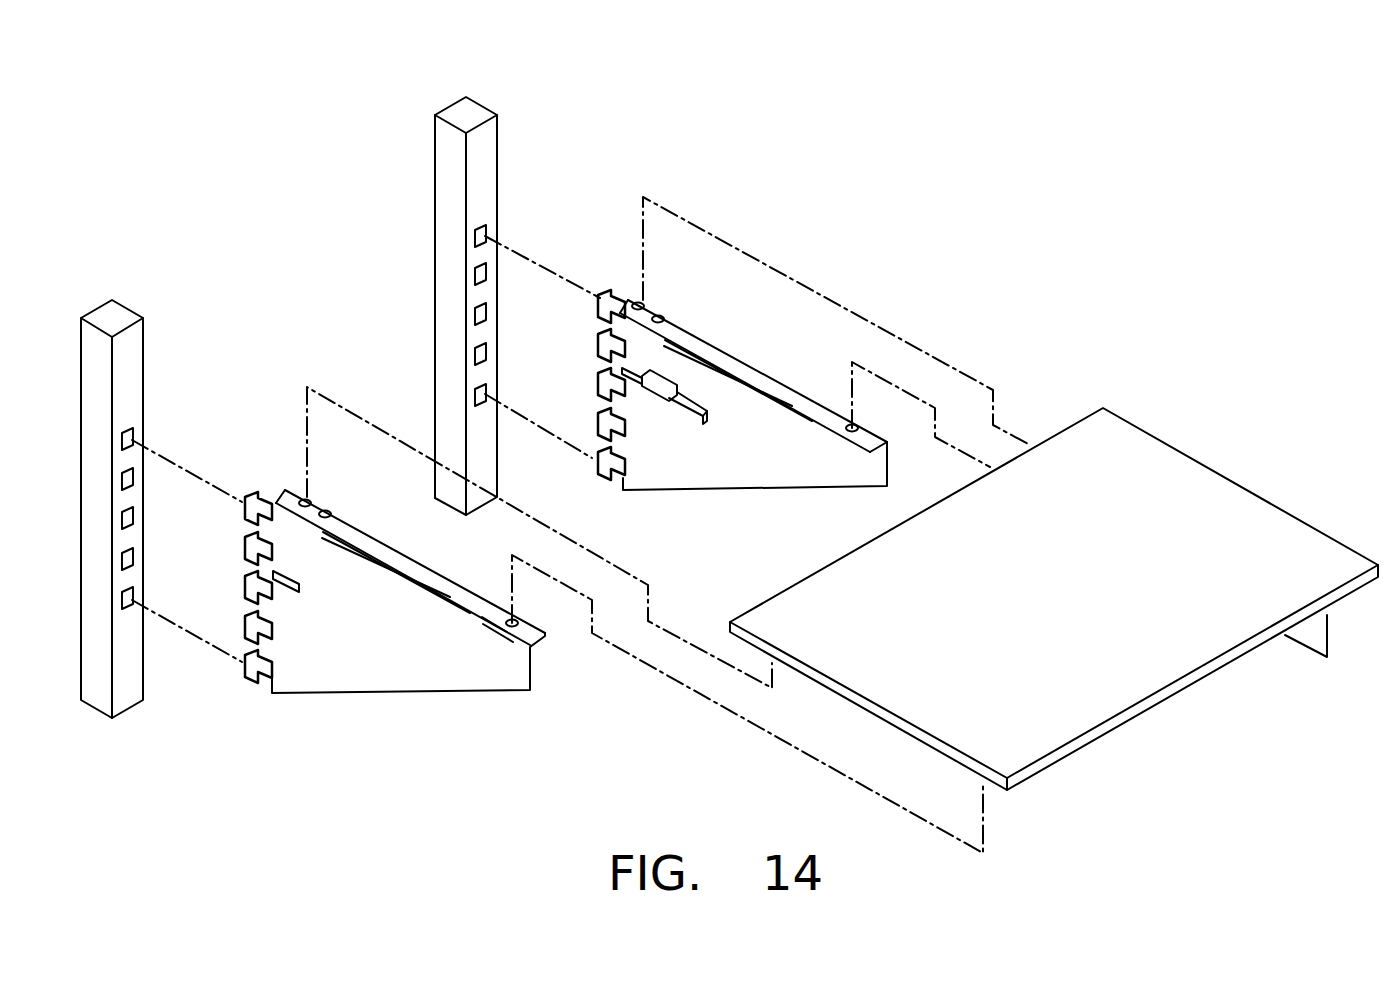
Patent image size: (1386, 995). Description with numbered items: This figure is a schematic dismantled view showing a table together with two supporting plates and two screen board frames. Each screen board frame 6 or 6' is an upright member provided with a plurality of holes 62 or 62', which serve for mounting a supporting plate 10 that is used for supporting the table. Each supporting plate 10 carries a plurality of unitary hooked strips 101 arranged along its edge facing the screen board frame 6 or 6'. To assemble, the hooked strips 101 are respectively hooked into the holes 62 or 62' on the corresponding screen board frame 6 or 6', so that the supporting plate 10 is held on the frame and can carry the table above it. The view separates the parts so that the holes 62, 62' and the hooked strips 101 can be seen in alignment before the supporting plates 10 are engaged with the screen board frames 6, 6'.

The screen board frame 6 is at (160, 483).
The screen board frame 6' is at (517, 279).
The holes 62 is at (185, 390).
The holes 62' is at (543, 188).
The supporting plate 10 is at (323, 683).
The unitary hooked strips 101 is at (256, 492).